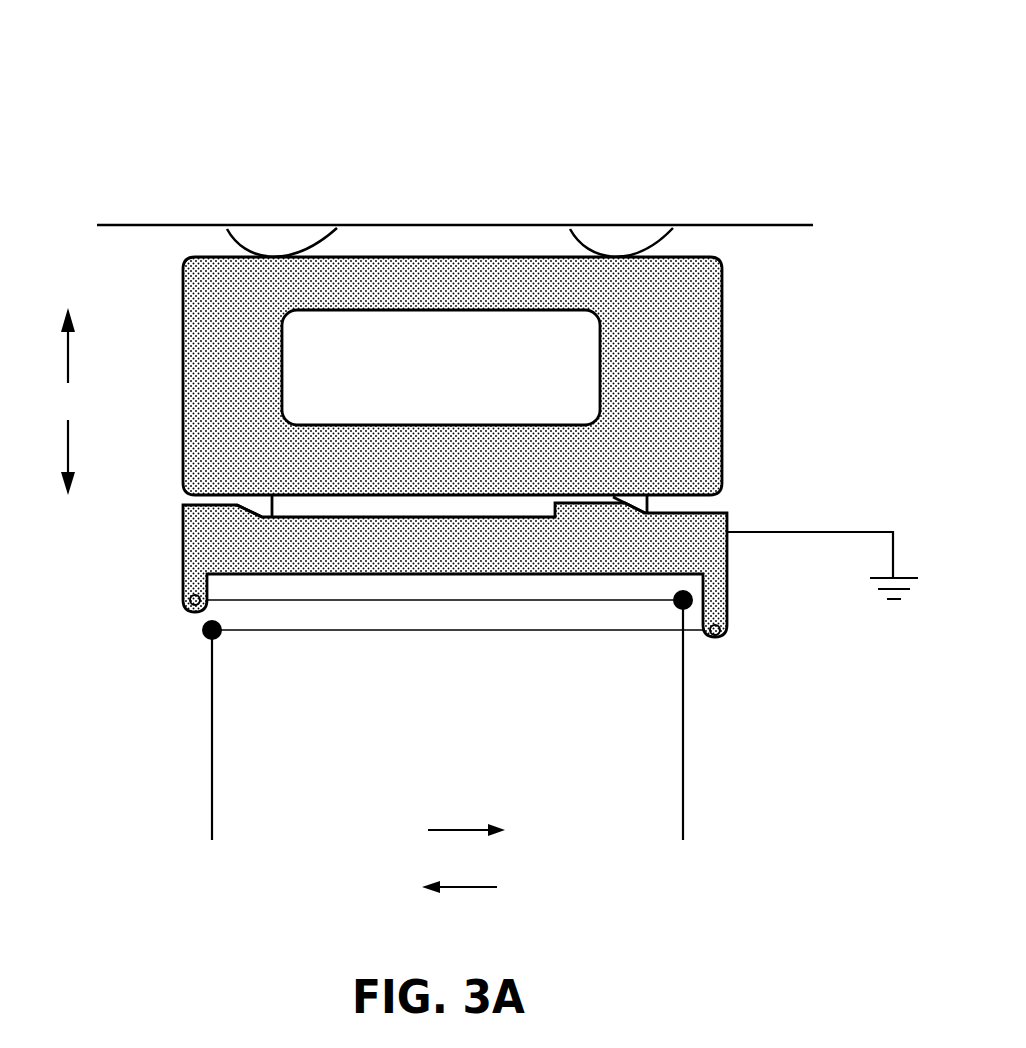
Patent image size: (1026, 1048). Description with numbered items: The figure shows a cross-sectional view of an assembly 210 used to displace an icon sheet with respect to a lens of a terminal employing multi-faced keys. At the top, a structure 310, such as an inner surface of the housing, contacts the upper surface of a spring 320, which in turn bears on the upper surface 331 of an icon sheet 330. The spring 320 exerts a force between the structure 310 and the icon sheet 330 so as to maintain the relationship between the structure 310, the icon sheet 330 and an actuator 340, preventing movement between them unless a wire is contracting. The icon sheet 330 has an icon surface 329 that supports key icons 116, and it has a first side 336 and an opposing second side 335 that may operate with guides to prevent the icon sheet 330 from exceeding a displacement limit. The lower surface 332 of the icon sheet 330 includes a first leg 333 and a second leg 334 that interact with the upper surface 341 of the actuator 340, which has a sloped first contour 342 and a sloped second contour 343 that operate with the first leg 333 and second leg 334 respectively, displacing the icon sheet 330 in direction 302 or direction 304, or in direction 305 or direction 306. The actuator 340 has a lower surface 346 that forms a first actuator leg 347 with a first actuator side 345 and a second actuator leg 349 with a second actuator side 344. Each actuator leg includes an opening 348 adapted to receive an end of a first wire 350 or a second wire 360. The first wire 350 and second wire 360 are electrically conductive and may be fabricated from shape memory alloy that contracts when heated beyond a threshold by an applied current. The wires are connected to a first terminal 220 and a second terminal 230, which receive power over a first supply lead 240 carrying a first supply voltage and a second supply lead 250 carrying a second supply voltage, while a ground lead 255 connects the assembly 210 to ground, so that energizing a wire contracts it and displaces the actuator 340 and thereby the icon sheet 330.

The assembly 210 is at (263, 98).
The structure 310 is at (742, 228).
The spring 320 is at (603, 228).
The icon sheet 330 is at (708, 312).
The key icons 116 is at (441, 367).
The upper surface 331 is at (683, 262).
The first side 336 is at (722, 365).
The icon surface 329 is at (186, 316).
The second side 335 is at (183, 353).
The direction 302 is at (43, 345).
The direction 304 is at (43, 457).
The actuator 340 is at (722, 512).
The second leg 334 is at (240, 505).
The lower surface 332 is at (408, 498).
The first leg 333 is at (628, 500).
The second contour 343 is at (255, 506).
The second actuator side 344 is at (188, 527).
The lower surface 346 is at (340, 568).
The upper surface 341 is at (520, 508).
The first contour 342 is at (613, 508).
The first actuator side 345 is at (722, 538).
The second actuator leg 349 is at (186, 588).
The first actuator leg 347 is at (732, 605).
The opening 348 is at (184, 606).
The first wire 350 is at (325, 630).
The second wire 360 is at (600, 630).
The second terminal 230 is at (205, 638).
The first terminal 220 is at (723, 588).
The second supply lead 250 is at (210, 718).
The first supply lead 240 is at (682, 715).
The ground lead 255 is at (800, 532).
The direction 305 is at (442, 832).
The direction 306 is at (491, 889).